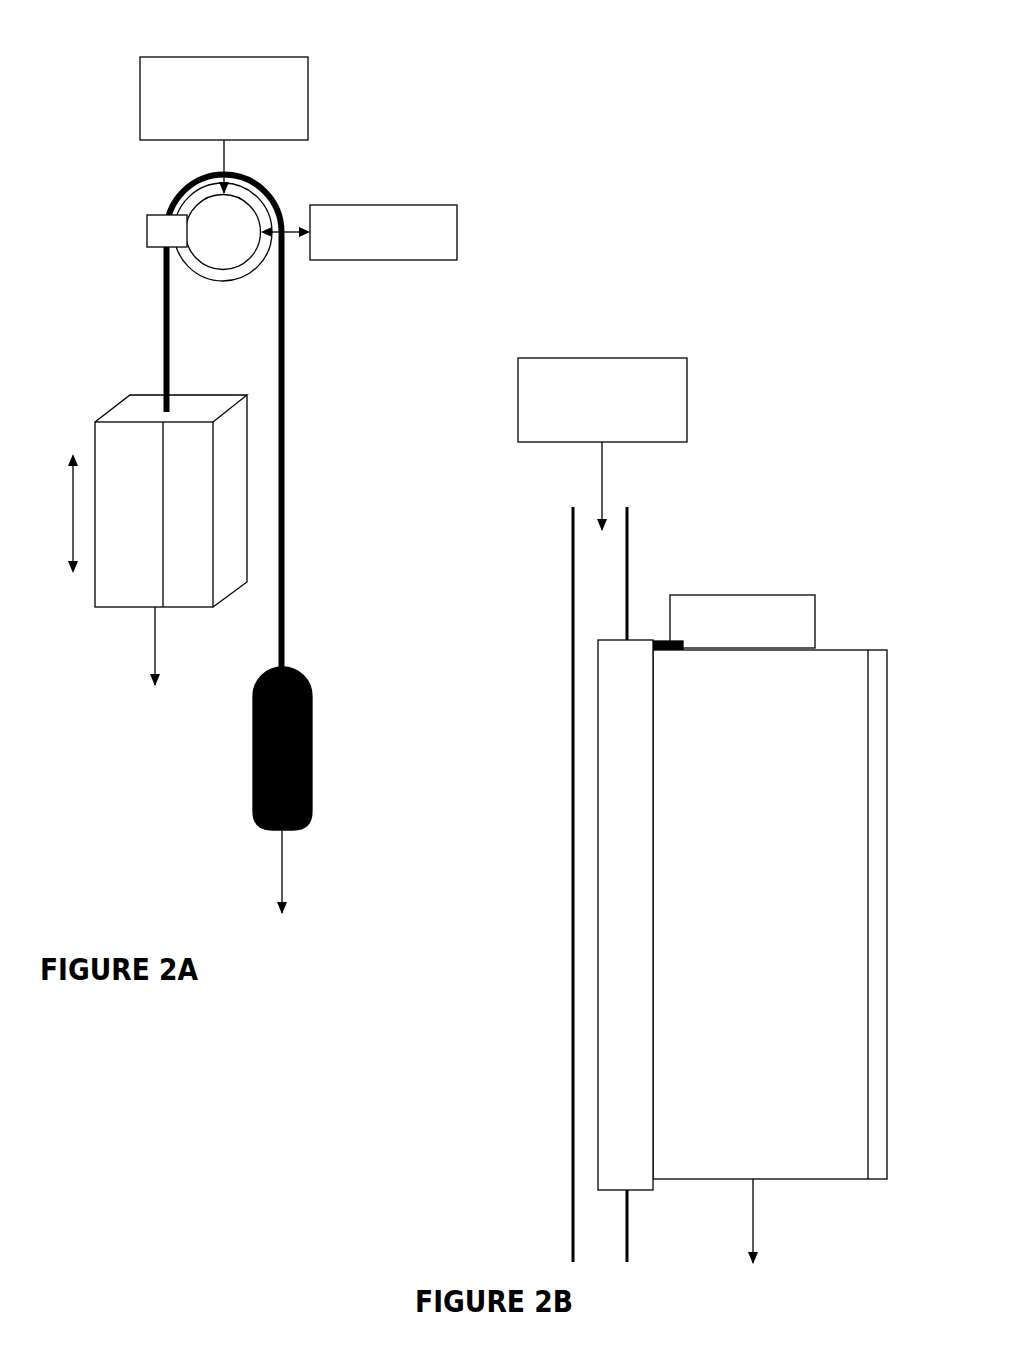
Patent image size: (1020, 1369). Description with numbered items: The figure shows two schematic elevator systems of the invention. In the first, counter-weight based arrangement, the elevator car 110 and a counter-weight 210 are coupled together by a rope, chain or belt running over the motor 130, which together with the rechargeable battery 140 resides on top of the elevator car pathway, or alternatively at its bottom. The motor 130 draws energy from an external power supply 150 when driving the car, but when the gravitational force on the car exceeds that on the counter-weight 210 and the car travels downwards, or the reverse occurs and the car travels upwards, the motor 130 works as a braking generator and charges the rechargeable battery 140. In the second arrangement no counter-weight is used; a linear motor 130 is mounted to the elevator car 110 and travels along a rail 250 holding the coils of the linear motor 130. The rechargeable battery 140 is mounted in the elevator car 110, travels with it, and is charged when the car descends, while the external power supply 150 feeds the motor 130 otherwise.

In FIG. 2A, the elevator car 110 is at (94, 448).
In FIG. 2B, the elevator car 110 is at (782, 1181).
In FIG. 2A, the motor 130 is at (255, 205).
In FIG. 2B, the motor 130 is at (598, 723).
In FIG. 2A, the rechargeable battery 140 is at (456, 206).
In FIG. 2B, the rechargeable battery 140 is at (812, 594).
In FIG. 2A, the external power supply 150 is at (294, 57).
In FIG. 2B, the external power supply 150 is at (638, 357).
In FIG. 2A, the counter-weight 210 is at (309, 680).
In FIG. 2B, the rail 250 is at (573, 965).